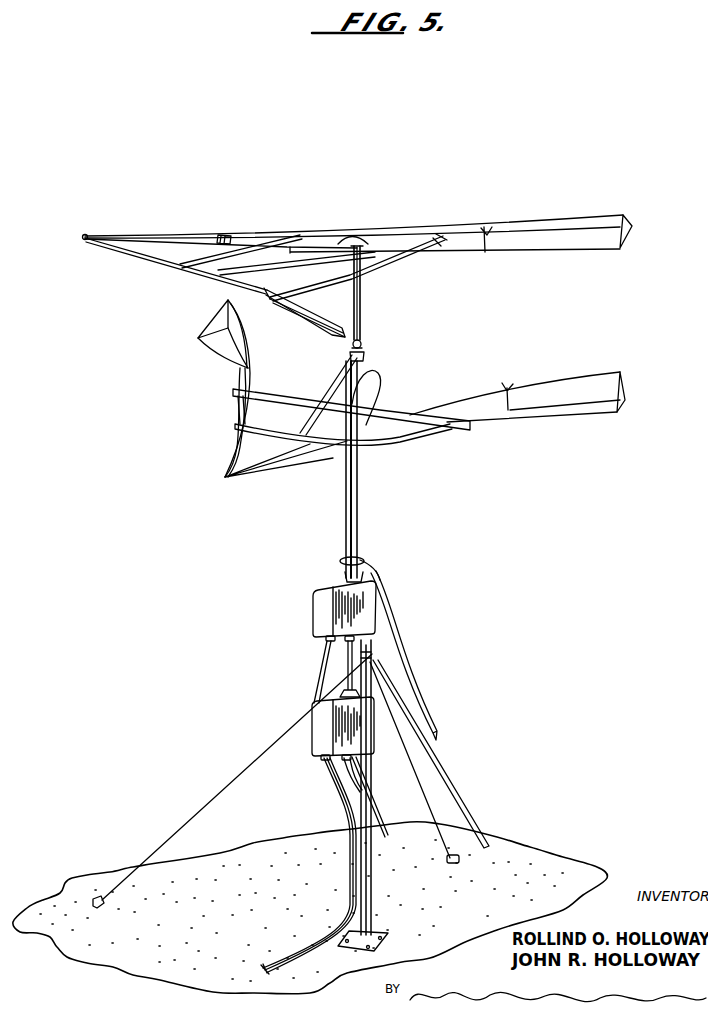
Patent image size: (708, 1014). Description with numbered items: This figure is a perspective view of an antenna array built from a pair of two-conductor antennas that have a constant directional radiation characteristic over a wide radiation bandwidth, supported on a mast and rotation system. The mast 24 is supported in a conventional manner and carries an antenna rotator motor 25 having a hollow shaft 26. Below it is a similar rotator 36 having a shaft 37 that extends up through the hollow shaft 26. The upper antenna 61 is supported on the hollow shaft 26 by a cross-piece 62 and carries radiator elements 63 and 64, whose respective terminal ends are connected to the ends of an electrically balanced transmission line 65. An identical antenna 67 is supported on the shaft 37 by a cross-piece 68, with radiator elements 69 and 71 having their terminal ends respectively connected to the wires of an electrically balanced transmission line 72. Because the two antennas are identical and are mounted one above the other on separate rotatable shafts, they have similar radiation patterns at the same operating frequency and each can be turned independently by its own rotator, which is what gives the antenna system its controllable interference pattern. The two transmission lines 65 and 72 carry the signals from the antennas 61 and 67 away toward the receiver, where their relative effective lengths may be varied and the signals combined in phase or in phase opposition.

The mast 24 is at (371, 910).
The antenna rotator motor 25 is at (370, 618).
The hollow shaft 26 is at (360, 527).
The rotator 36 is at (366, 736).
The shaft 37 is at (361, 319).
The antenna 61 is at (383, 451).
The cross-piece 62 is at (393, 410).
The radiator element 63 is at (224, 360).
The radiator element 64 is at (527, 386).
The electrically balanced transmission line 65 is at (378, 378).
The antenna 67 is at (394, 268).
The cross-piece 68 is at (346, 279).
The radiator element 69 is at (550, 226).
The radiator element 71 is at (182, 265).
The electrically balanced transmission line 72 is at (340, 236).